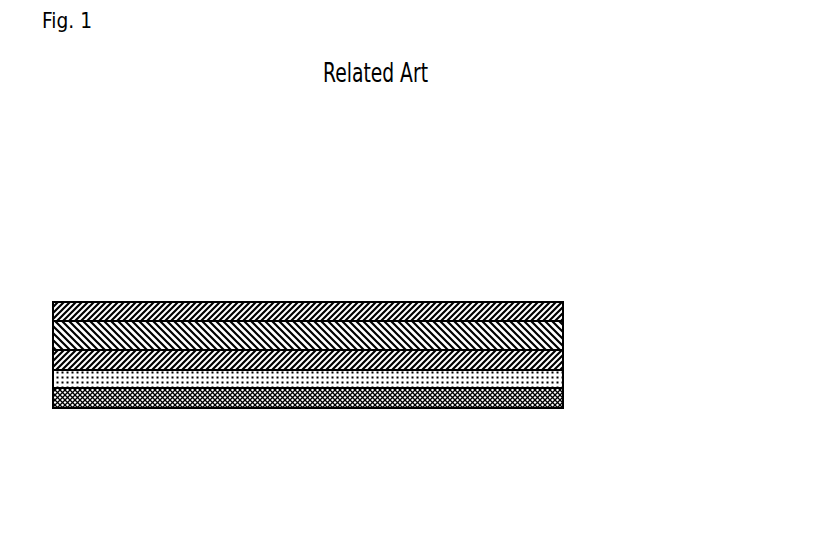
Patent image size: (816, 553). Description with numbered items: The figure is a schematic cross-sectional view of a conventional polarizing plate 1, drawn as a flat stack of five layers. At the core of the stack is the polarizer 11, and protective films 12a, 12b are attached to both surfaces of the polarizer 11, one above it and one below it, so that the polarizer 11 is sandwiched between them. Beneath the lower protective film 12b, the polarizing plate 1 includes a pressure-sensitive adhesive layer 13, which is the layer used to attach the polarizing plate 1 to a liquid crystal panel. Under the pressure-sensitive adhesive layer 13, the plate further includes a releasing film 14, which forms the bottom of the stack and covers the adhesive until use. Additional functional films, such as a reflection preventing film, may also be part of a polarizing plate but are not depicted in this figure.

The polarizing plate 1 is at (388, 228).
The polarizer 11 is at (556, 334).
The protective film 12a is at (551, 306).
The protective film 12b is at (557, 363).
The pressure-sensitive adhesive layer 13 is at (556, 381).
The releasing film 14 is at (511, 398).